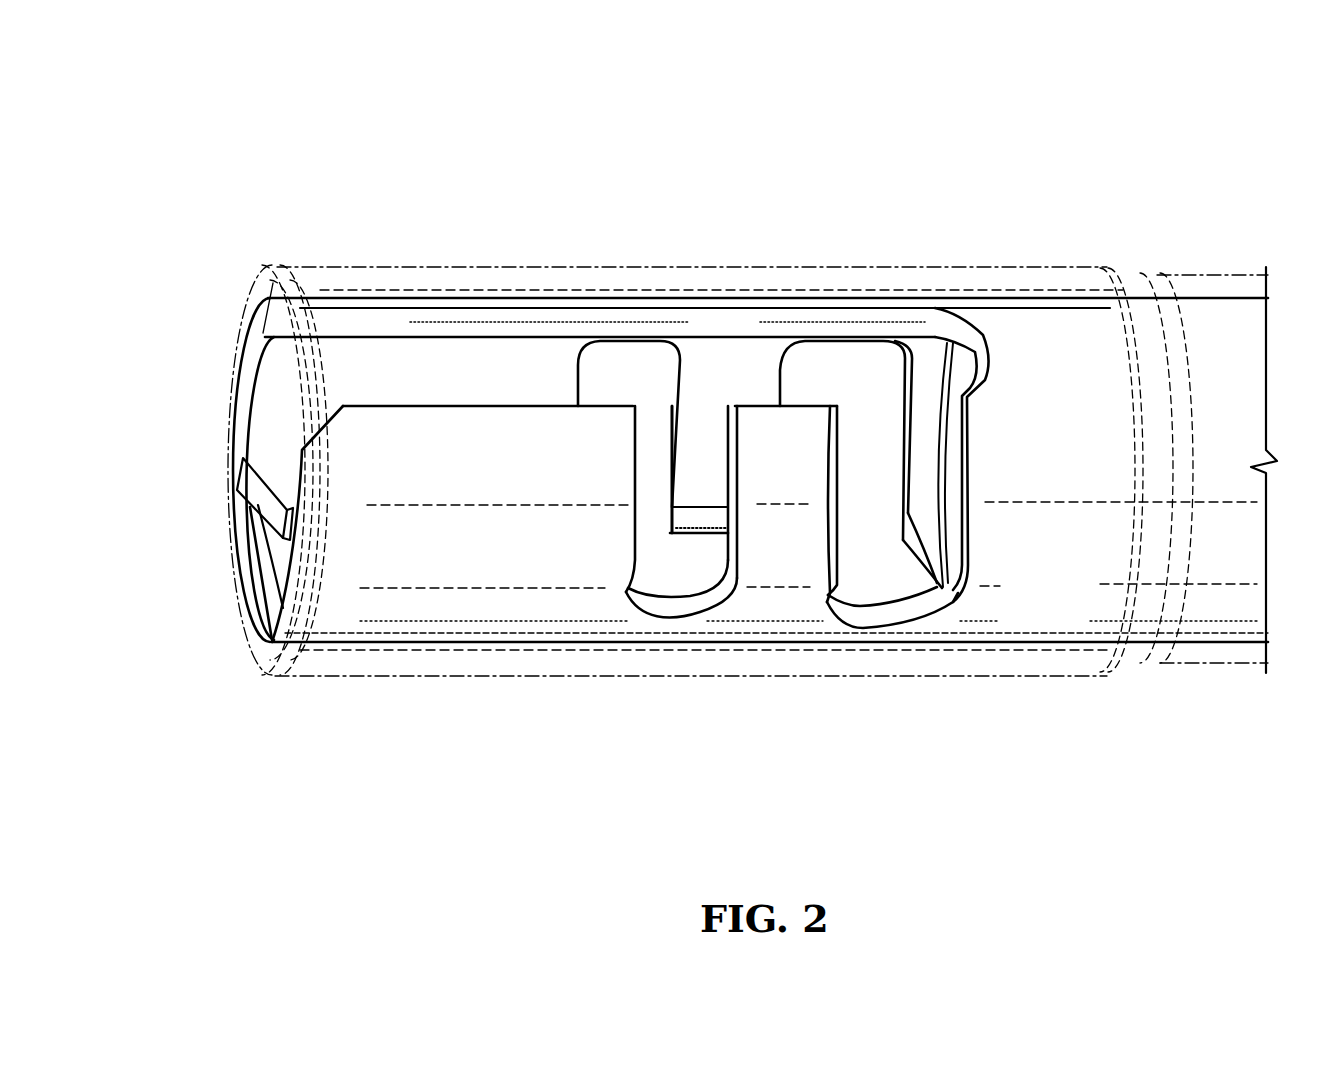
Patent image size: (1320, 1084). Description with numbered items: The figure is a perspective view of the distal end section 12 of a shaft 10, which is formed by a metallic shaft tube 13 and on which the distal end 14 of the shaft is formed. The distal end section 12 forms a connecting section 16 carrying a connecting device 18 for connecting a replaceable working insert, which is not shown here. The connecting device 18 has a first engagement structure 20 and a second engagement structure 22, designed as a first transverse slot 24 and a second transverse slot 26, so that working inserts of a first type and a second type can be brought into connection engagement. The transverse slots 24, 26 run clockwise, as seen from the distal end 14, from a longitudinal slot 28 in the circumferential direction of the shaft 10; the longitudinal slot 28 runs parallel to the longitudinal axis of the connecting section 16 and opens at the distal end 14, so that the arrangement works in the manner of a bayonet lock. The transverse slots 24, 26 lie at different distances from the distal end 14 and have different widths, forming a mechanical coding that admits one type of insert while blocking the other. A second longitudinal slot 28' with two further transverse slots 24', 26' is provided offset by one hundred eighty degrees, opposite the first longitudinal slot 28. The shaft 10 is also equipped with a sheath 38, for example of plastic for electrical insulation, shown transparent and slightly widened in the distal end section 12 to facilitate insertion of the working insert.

The shaft 10 is at (1162, 180).
The distal end section 12 is at (203, 185).
The metallic shaft tube 13 is at (1223, 323).
The distal end 14 is at (285, 605).
The connecting section 16 is at (473, 725).
The connecting device 18 is at (878, 577).
The first engagement structure 20 is at (705, 392).
The second engagement structure 22 is at (930, 400).
The first transverse slot 24 is at (681, 499).
The first transverse slot 24' is at (629, 424).
The second transverse slot 26 is at (884, 504).
The second transverse slot 26' is at (846, 440).
The longitudinal slot 28 is at (452, 372).
The longitudinal slot 28' is at (208, 503).
The sheath 38 is at (455, 278).